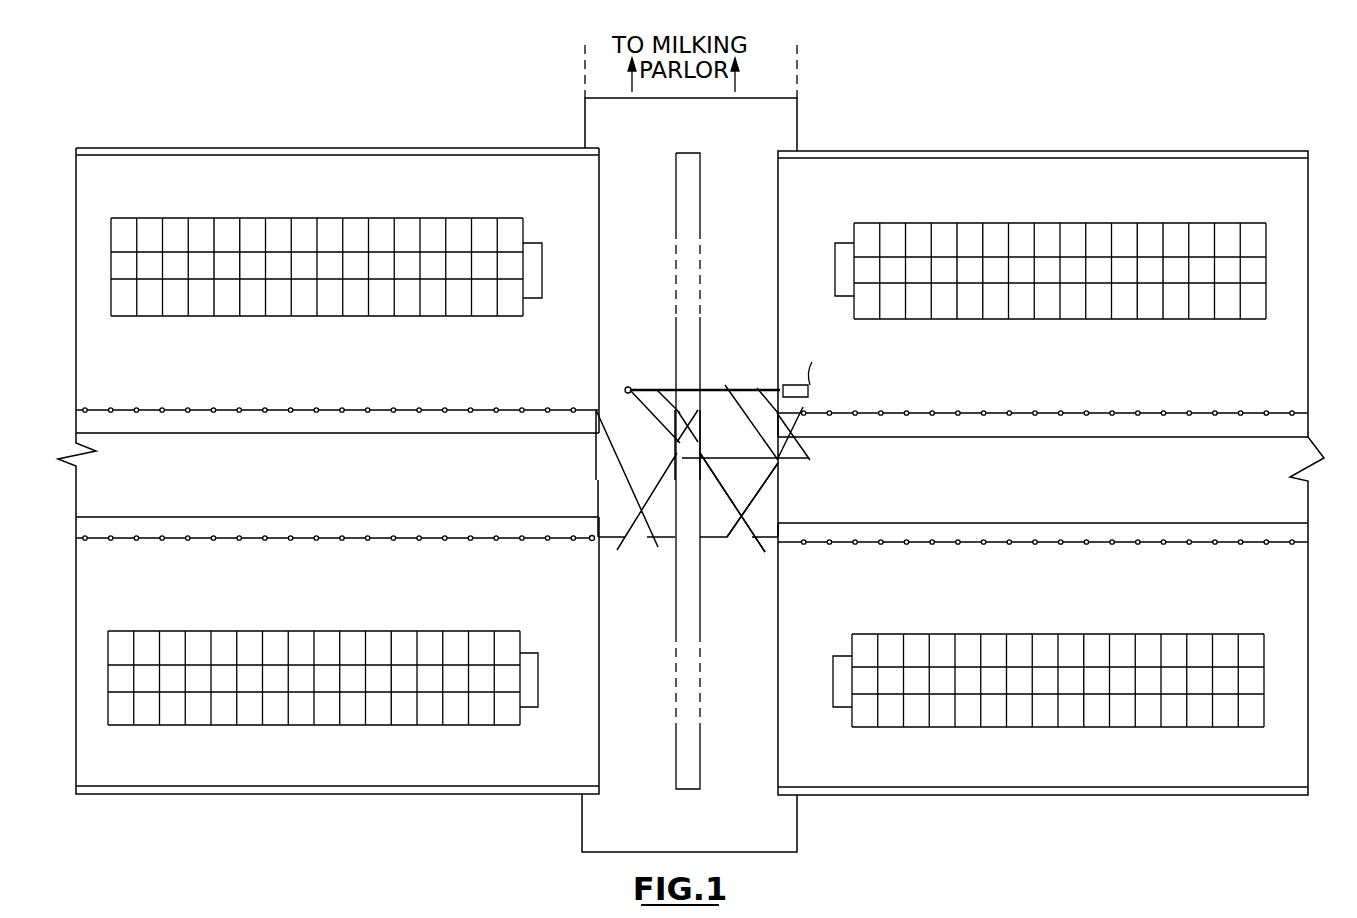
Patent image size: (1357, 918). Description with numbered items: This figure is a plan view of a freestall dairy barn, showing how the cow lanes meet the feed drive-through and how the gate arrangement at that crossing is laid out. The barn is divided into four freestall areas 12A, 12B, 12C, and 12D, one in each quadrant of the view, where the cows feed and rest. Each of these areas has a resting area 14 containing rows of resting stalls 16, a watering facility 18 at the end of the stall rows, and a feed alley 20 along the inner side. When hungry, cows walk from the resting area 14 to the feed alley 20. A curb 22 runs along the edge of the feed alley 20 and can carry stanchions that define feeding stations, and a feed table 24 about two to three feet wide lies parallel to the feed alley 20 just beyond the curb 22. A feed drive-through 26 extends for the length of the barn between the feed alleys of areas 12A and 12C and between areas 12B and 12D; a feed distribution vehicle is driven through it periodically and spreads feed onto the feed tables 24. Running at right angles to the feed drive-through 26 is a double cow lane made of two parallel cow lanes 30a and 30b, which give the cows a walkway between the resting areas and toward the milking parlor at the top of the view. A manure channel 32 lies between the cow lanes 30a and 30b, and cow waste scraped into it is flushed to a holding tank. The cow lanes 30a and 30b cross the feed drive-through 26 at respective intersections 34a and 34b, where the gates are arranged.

The freestall area 12A is at (396, 388).
The freestall area 12B is at (1056, 363).
The freestall area 12C is at (506, 581).
The freestall area 12D is at (1056, 591).
The resting area 14 is at (460, 318).
The resting stalls 16 is at (962, 223).
The watering facility 18 is at (530, 298).
The feed alley 20 is at (159, 389).
The curb 22 is at (298, 408).
The feed table 24 is at (185, 527).
The feed drive-through 26 is at (90, 487).
The cow lane 30a is at (659, 308).
The cow lane 30b is at (761, 649).
The manure channel 32 is at (690, 152).
The intersection 34a is at (632, 428).
The intersection 34b is at (763, 520).